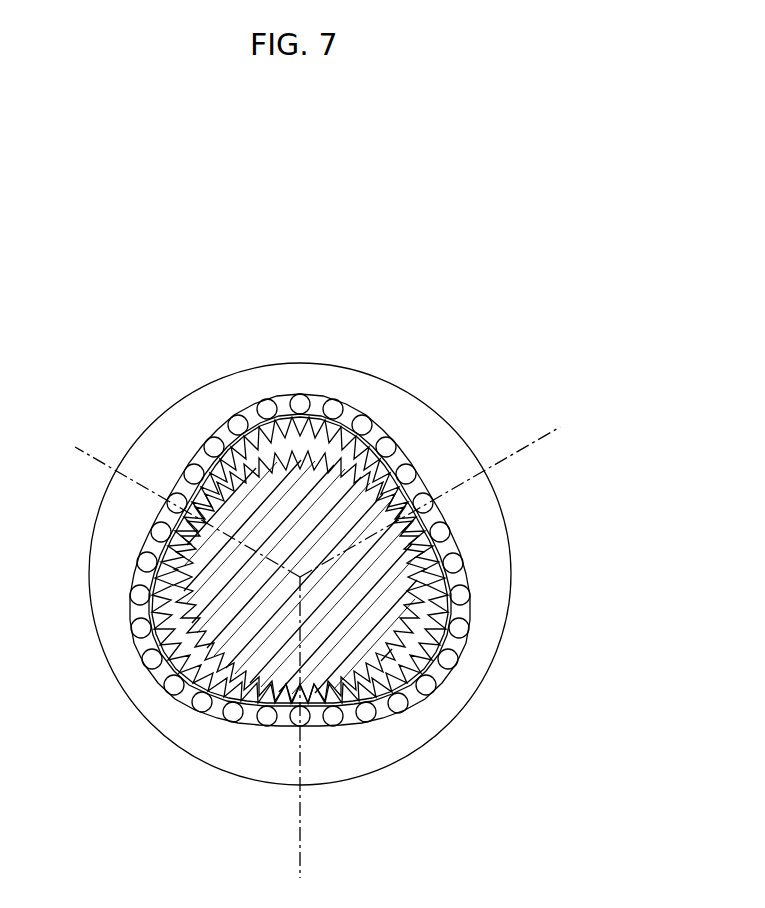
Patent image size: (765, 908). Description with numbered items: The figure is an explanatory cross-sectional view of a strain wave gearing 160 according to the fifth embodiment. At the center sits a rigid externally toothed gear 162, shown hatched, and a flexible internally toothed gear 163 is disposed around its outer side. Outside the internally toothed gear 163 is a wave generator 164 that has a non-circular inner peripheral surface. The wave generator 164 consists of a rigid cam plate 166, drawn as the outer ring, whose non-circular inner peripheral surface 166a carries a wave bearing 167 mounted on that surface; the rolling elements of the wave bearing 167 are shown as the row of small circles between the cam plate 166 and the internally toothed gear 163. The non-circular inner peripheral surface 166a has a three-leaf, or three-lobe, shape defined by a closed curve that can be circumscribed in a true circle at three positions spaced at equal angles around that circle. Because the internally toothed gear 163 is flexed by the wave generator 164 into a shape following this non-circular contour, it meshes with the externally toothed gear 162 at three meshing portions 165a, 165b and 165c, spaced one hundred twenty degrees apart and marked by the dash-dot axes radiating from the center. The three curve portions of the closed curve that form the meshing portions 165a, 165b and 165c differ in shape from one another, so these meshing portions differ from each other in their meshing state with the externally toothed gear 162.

The strain wave gearing 160 is at (423, 375).
The rigid externally toothed gear 162 is at (383, 648).
The flexible internally toothed gear 163 is at (443, 600).
The wave generator 164 is at (480, 567).
The meshing portion 165a is at (437, 512).
The meshing portion 165b is at (177, 500).
The meshing portion 165c is at (318, 727).
The rigid cam plate 166 is at (220, 752).
The non-circular inner peripheral surface 166a is at (180, 697).
The wave bearing 167 is at (352, 722).